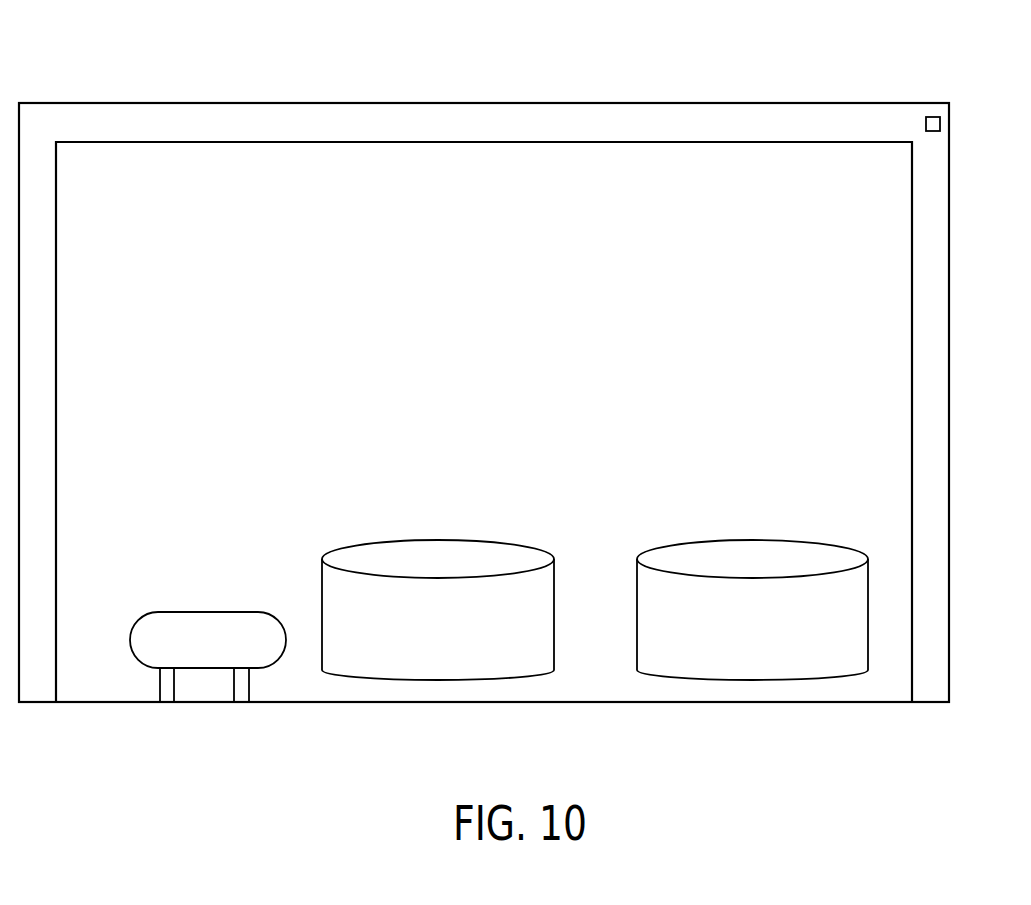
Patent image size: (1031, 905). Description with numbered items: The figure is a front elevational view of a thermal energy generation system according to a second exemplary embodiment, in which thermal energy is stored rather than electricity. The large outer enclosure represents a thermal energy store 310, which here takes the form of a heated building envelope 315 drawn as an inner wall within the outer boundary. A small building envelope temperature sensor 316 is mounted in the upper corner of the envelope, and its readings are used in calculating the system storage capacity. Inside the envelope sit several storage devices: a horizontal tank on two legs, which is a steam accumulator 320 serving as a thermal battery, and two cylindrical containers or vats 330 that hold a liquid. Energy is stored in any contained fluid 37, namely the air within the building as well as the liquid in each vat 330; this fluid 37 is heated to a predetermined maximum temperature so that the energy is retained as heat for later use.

The thermal energy store 310 is at (289, 83).
The building envelope 315 is at (935, 428).
The building envelope temperature sensor 316 is at (940, 125).
The steam accumulator 320 is at (192, 660).
The container or vat 330 is at (508, 663).
The contained fluid 37 is at (925, 523).